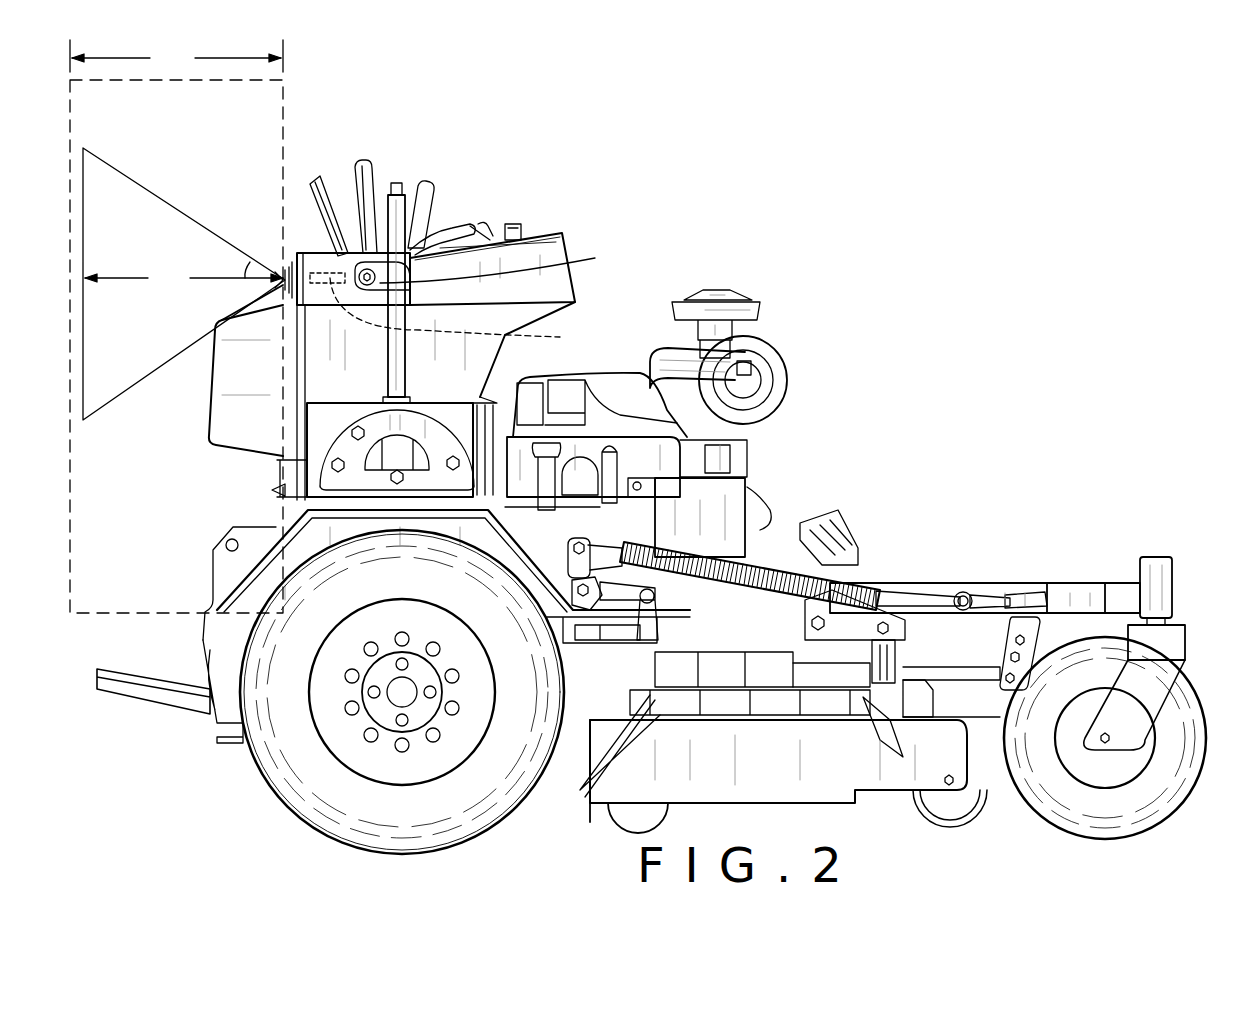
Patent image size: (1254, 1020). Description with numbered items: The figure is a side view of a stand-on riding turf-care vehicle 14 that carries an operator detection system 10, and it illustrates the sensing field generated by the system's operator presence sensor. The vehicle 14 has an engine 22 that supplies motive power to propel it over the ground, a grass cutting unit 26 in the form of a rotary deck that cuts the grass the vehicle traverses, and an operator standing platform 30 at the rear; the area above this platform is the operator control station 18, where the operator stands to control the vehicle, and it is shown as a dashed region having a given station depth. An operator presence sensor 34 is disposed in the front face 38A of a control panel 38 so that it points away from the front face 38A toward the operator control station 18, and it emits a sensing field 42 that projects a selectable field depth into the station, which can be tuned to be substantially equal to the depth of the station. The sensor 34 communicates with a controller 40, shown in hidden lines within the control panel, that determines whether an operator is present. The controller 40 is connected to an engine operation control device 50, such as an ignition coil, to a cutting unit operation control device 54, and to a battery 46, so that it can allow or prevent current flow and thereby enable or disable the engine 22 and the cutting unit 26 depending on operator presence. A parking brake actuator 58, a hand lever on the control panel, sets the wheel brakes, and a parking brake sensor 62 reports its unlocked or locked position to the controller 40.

The operator detection system 10 is at (296, 232).
The turf-care vehicle 14 is at (773, 235).
The operator control station 18 is at (85, 548).
The engine 22 is at (773, 393).
The grass cutting unit 26 is at (785, 710).
The operator standing platform 30 is at (150, 693).
The operator presence sensor 34 is at (282, 277).
The control panel 38 is at (520, 257).
The front face 38A is at (283, 287).
The controller 40 is at (460, 312).
The sensing field 42 is at (115, 208).
The battery 46 is at (703, 517).
The engine operation control device 50 is at (752, 455).
The cutting unit operation control device 54 is at (847, 648).
The parking brake actuator 58 is at (436, 230).
The parking brake sensor 62 is at (502, 262).